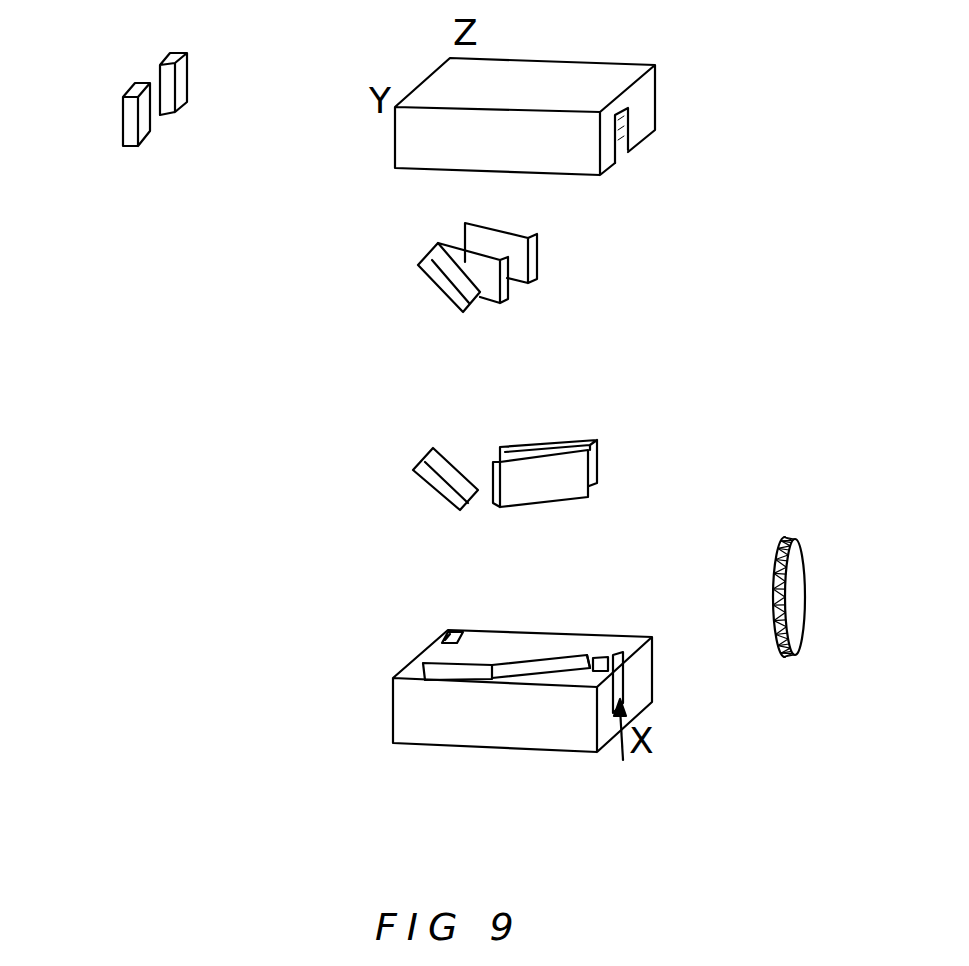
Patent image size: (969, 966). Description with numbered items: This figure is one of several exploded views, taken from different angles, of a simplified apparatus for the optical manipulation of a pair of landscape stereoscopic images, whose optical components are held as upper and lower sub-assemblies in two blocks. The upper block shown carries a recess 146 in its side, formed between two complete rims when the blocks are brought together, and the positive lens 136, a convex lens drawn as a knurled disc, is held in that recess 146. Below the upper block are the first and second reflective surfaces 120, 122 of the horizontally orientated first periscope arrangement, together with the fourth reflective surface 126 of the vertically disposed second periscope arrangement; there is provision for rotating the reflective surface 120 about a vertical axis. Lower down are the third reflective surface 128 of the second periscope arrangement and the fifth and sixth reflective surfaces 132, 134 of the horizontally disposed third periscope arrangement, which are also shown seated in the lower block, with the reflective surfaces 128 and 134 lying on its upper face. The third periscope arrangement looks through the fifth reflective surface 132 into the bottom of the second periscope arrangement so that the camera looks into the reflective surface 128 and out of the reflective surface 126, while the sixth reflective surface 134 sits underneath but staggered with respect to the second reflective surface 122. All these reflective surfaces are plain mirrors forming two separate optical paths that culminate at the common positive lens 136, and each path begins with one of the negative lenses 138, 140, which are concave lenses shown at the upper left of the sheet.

The first reflective surface 120 is at (516, 242).
The second reflective surface 122 is at (460, 245).
The fourth reflective surface 126 is at (424, 258).
The third reflective surface 128 is at (437, 468).
The fifth reflective surface 132 is at (573, 487).
The sixth reflective surface 134 is at (598, 445).
The positive lens 136 is at (798, 560).
The negative lens 138 is at (124, 92).
The negative lens 140 is at (167, 54).
The recess 146 is at (624, 148).